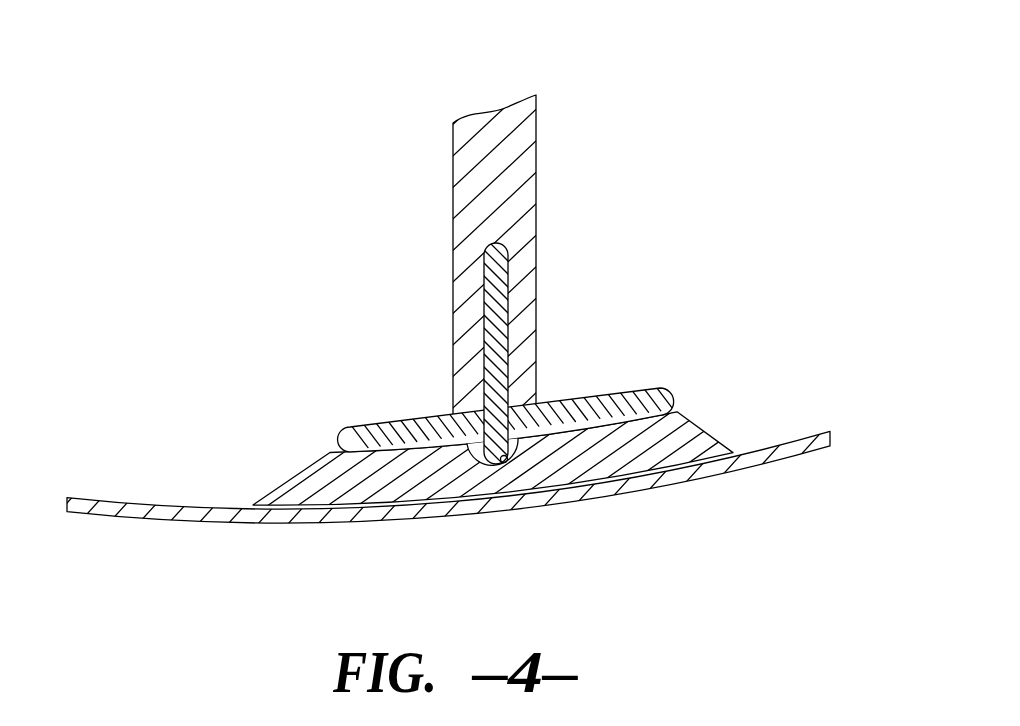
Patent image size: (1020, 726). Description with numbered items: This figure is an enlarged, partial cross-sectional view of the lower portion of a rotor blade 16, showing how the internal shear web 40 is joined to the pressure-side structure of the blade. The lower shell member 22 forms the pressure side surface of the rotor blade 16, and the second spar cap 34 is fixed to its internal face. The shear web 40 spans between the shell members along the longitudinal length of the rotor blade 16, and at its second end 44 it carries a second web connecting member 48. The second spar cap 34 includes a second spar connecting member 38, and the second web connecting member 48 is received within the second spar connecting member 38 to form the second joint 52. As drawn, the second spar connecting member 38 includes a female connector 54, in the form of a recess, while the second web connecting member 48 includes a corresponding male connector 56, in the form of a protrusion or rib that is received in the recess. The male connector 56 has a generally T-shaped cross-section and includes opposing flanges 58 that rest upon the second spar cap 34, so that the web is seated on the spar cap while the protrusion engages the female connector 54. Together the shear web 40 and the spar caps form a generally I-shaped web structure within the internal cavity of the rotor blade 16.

The rotor blade 16 is at (707, 484).
The lower shell member 22 is at (207, 522).
The second spar cap 34 is at (722, 422).
The second spar connecting member 38 is at (522, 456).
The shear web 40 is at (451, 205).
The second end of the shear web 44 is at (452, 330).
The second web connecting member 48 is at (600, 392).
The second joint 52 is at (716, 276).
The female connector 54 is at (510, 462).
The male connector 56 is at (493, 468).
The opposing flanges 58 is at (405, 413).